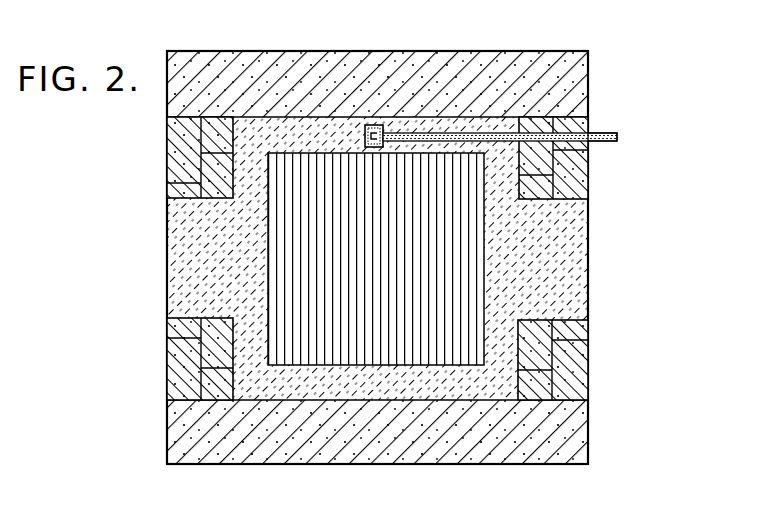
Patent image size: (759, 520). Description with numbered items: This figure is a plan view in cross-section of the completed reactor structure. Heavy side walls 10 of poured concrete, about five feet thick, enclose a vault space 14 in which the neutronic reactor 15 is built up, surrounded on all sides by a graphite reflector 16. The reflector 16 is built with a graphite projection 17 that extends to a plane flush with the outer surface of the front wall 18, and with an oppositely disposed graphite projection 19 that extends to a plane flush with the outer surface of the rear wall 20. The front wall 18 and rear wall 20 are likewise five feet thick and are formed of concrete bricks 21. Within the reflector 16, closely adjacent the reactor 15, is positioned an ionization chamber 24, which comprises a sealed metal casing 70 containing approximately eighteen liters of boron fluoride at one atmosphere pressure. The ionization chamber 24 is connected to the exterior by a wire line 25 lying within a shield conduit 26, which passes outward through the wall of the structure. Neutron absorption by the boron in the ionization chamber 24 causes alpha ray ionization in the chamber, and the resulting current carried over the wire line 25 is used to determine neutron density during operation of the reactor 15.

The side walls 10 is at (377, 256).
The vault space 14 is at (378, 258).
The neutronic reactor 15 is at (317, 397).
The graphite reflector 16 is at (320, 115).
The graphite projection 17 is at (573, 218).
The front wall 18 is at (589, 175).
The graphite projection 19 is at (378, 258).
The rear wall 20 is at (166, 155).
The concrete bricks 21 is at (170, 208).
The ionization chamber 24 is at (378, 124).
The wire line 25 is at (618, 137).
The shield conduit 26 is at (537, 78).
The sealed metal casing 70 is at (446, 132).